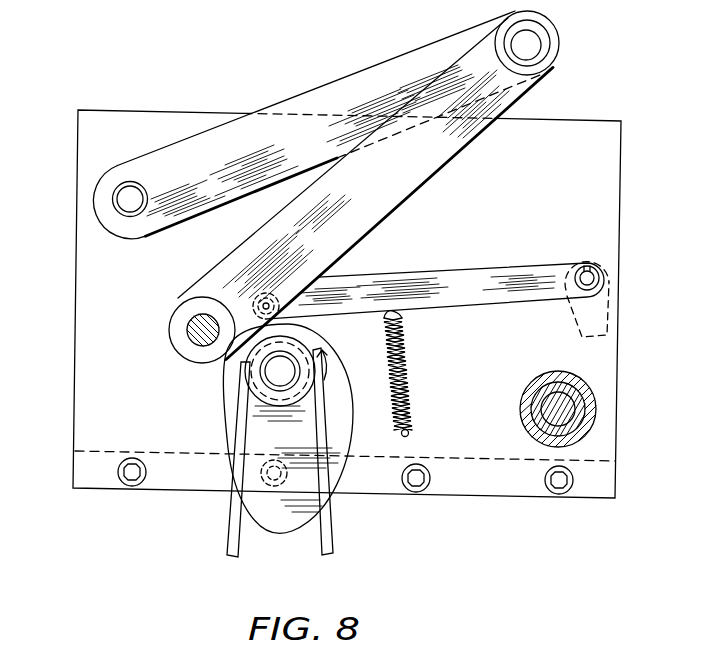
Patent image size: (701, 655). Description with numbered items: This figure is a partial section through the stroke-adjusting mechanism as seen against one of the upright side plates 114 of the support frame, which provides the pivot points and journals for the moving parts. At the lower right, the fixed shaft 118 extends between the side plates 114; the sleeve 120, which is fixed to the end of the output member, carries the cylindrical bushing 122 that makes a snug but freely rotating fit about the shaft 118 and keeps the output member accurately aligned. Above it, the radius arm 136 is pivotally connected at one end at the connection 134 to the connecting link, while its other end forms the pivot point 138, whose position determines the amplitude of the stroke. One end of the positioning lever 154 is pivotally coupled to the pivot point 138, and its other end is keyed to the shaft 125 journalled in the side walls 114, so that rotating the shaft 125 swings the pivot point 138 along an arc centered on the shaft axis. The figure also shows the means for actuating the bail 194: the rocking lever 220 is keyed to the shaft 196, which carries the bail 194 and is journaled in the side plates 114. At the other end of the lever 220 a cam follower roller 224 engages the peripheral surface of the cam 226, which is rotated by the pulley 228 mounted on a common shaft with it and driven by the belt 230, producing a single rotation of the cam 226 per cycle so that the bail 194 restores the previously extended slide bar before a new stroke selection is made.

The side plate 114 is at (82, 340).
The fixed shaft 118 is at (557, 396).
The sleeve 120 is at (543, 441).
The cylindrical bushing 122 is at (532, 413).
The shaft 125 is at (132, 207).
The pivotal connection 134 is at (190, 330).
The radius arm 136 is at (436, 172).
The pivot point 138 is at (540, 47).
The positioning lever 154 is at (342, 83).
The bail 194 is at (600, 320).
The shaft 196 is at (599, 278).
The rocking lever 220 is at (502, 274).
The cam follower roller 224 is at (268, 296).
The cam 226 is at (300, 517).
The pulley 228 is at (259, 377).
The belt 230 is at (333, 548).